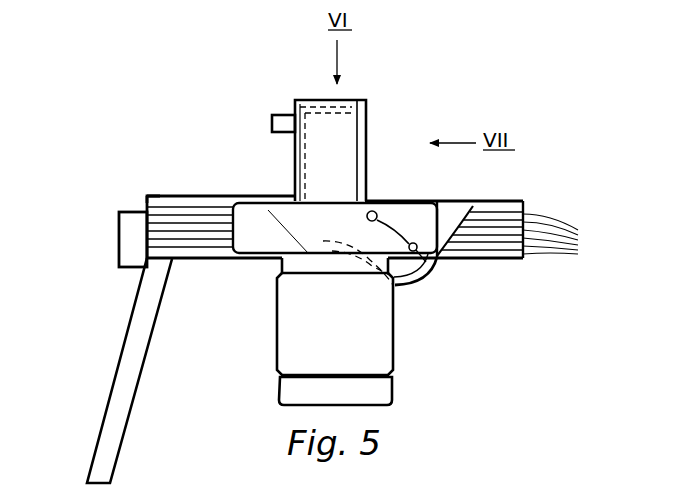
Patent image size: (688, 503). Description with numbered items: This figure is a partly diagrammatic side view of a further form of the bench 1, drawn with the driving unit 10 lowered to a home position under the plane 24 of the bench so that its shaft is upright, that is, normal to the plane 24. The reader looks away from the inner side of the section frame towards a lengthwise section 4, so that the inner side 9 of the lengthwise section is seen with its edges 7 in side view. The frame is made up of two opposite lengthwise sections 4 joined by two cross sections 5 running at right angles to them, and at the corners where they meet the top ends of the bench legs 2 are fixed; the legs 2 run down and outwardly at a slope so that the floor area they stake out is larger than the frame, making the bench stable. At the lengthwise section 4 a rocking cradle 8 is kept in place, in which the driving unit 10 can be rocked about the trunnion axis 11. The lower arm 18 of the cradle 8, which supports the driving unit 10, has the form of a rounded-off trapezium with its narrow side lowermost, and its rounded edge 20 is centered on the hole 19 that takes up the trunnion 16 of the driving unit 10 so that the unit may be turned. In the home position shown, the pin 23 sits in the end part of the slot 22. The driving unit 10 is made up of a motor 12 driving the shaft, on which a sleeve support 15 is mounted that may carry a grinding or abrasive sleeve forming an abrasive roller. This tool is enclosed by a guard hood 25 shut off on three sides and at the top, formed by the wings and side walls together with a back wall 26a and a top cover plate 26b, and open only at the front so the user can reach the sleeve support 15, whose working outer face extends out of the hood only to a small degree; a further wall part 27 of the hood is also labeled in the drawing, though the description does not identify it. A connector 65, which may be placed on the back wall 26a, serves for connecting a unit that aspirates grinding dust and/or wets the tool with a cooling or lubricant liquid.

The bench 1 is at (183, 183).
The bench legs 2 is at (110, 423).
The lengthwise section 4 is at (150, 196).
The cross section 5 is at (125, 240).
The edges 7 is at (564, 234).
The rocking cradle 8 is at (460, 217).
The inner side 9 is at (191, 232).
The driving unit 10 is at (275, 335).
The trunnion axis 11 is at (375, 208).
The motor 12 is at (351, 349).
The sleeve support 15 is at (346, 165).
The trunnion 16 is at (367, 201).
The lower arm 18 is at (334, 234).
The hole 19 is at (420, 239).
The rounded edge 20 is at (409, 284).
The slot 22 is at (340, 261).
The pin 23 is at (445, 260).
The plane of the bench 24 is at (448, 199).
The guard hood 25 is at (292, 150).
The back wall 26a is at (293, 169).
The top cover plate 26b is at (318, 107).
The wall 27 is at (372, 128).
The connector 65 is at (281, 110).